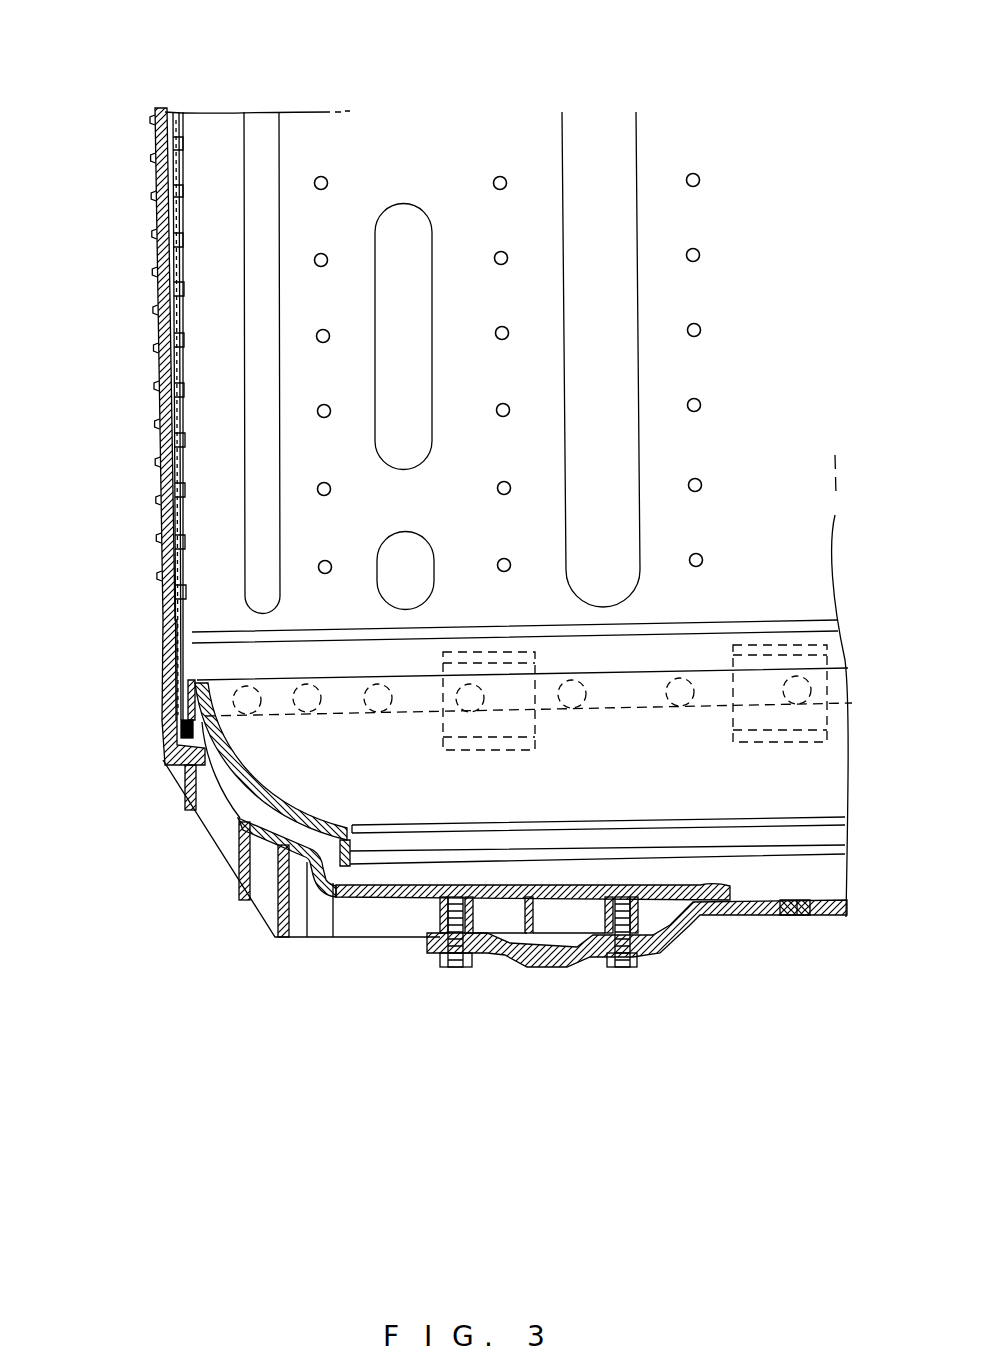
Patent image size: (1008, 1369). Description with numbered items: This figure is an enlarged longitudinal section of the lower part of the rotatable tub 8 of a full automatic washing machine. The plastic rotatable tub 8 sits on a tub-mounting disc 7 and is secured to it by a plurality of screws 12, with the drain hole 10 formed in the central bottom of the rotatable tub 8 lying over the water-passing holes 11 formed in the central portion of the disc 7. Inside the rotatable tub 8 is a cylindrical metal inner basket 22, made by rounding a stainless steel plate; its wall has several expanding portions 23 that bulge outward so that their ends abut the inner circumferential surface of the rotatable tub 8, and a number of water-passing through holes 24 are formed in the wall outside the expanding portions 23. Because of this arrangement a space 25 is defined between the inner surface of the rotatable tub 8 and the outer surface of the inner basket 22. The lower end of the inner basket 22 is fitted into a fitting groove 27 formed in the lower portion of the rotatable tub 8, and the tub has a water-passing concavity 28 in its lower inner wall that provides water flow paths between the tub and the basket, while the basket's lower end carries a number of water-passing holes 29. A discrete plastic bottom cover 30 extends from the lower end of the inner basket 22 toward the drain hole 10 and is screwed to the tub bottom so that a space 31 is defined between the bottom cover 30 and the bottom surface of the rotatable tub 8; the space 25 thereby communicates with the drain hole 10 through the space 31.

The tub-mounting disc 7 is at (717, 920).
The rotatable tub 8 is at (157, 220).
The drain hole 10 is at (732, 890).
The water-passing holes 11 is at (787, 917).
The screws 12 is at (620, 967).
The inner basket 22 is at (183, 162).
The expanding portions 23 is at (433, 393).
The water-passing through holes 24 is at (327, 180).
The space 25 is at (181, 408).
The fitting groove 27 is at (200, 733).
The water-passing concavity 28 is at (176, 698).
The water-passing holes 29 is at (215, 690).
The bottom cover 30 is at (275, 800).
The space 31 is at (270, 820).